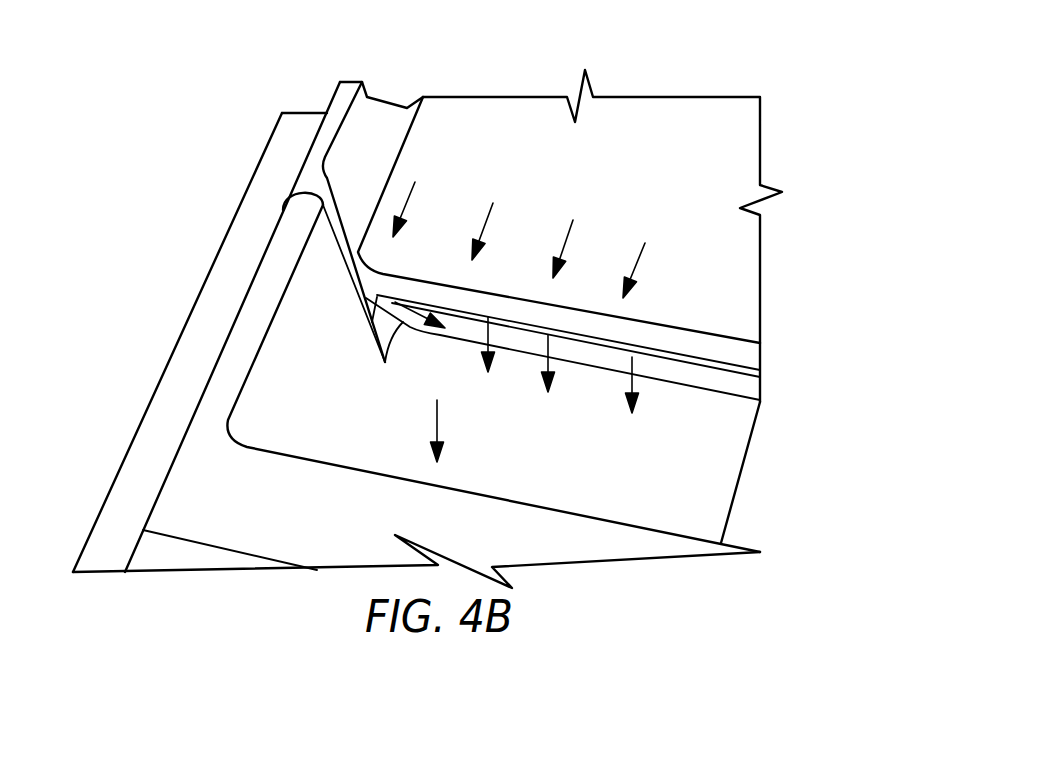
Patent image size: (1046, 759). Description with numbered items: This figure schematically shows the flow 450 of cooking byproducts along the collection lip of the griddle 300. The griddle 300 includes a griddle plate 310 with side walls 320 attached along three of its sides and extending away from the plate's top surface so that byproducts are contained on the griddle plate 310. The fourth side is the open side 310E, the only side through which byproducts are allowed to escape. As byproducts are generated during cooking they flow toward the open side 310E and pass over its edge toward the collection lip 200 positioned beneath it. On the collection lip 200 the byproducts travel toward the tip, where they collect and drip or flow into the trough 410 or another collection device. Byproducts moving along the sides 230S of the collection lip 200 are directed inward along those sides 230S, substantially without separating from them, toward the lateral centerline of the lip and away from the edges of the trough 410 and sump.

The collection lip 200 is at (717, 380).
The sides of the collection lip 230S is at (403, 323).
The griddle 300 is at (448, 130).
The griddle plate 310 is at (703, 128).
The open side of the griddle plate 310E is at (442, 241).
The side walls 320 is at (325, 145).
The trough 410 is at (203, 508).
The flow of cooking byproducts 450 is at (633, 272).